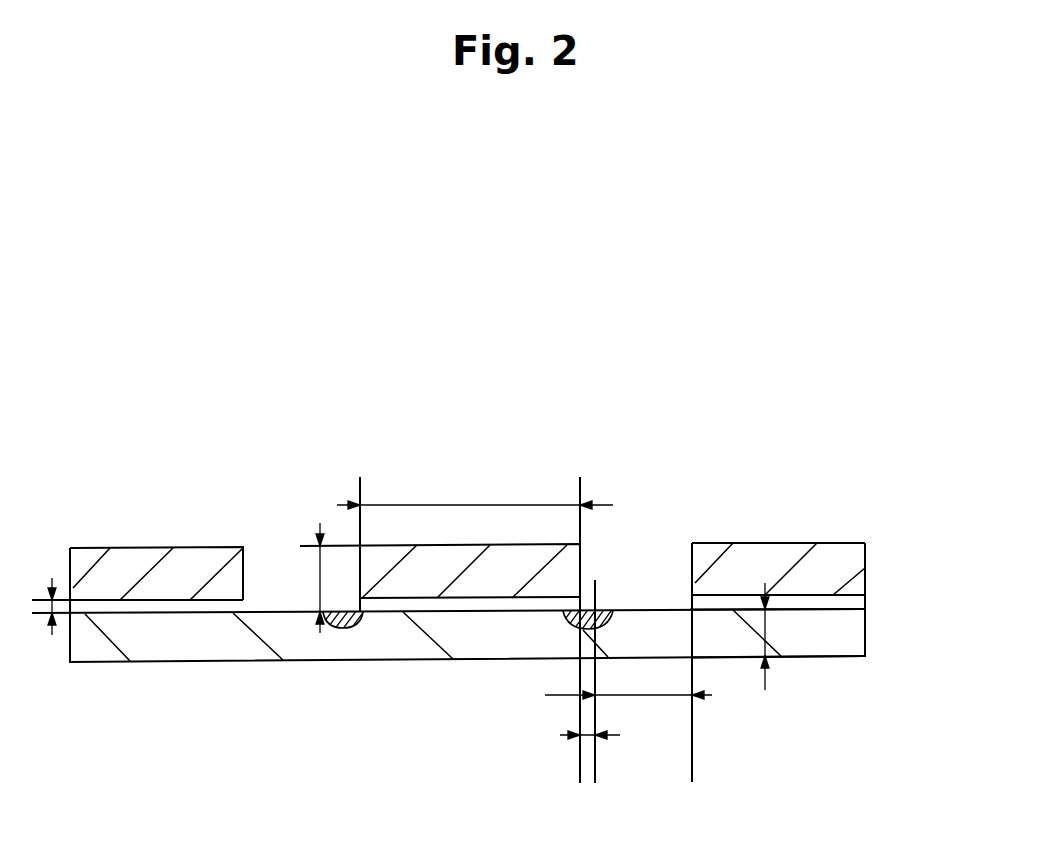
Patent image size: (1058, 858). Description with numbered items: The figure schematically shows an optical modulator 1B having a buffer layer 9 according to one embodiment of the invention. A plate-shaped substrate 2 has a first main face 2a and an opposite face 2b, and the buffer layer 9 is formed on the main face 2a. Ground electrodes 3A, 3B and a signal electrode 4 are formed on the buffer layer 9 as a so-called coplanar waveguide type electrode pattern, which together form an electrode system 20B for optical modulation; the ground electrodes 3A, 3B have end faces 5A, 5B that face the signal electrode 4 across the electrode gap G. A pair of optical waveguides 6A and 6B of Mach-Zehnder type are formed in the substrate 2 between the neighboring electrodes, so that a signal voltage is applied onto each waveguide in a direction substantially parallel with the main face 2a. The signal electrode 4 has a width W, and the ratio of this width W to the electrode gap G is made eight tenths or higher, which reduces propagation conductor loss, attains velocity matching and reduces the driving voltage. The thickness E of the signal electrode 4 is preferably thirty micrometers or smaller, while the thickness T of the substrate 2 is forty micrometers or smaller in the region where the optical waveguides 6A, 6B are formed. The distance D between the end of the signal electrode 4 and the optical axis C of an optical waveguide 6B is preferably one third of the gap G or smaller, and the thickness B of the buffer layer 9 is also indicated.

The optical modulator 1B is at (885, 518).
The substrate 2 is at (857, 638).
The first main face of the substrate 2a is at (815, 608).
The lower surface of base 2b is at (828, 657).
The ground electrode 3A is at (108, 553).
The ground electrode 3B is at (707, 555).
The signal electrode 4 is at (503, 556).
The end face of first element 5A is at (243, 545).
The end face of middle element 5B is at (578, 540).
The optical waveguide 6A is at (347, 628).
The optical waveguide 6B is at (592, 618).
The buffer layer 9 is at (866, 597).
The electrode system 20B is at (347, 532).
The width of the signal electrode W is at (455, 505).
The thickness of the signal electrode E is at (320, 570).
The bonding layer thickness B is at (42, 606).
The thickness of the substrate T is at (768, 637).
The electrode gap G is at (650, 697).
The distance of the end of the signal electrode and the optical axis of the optical D is at (585, 740).
The cutting line C is at (598, 752).